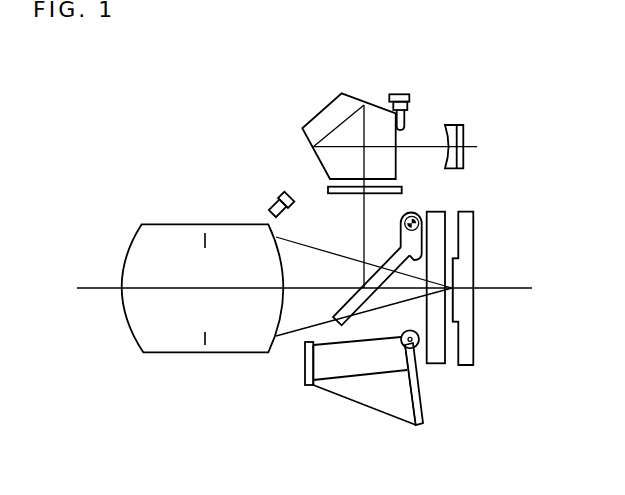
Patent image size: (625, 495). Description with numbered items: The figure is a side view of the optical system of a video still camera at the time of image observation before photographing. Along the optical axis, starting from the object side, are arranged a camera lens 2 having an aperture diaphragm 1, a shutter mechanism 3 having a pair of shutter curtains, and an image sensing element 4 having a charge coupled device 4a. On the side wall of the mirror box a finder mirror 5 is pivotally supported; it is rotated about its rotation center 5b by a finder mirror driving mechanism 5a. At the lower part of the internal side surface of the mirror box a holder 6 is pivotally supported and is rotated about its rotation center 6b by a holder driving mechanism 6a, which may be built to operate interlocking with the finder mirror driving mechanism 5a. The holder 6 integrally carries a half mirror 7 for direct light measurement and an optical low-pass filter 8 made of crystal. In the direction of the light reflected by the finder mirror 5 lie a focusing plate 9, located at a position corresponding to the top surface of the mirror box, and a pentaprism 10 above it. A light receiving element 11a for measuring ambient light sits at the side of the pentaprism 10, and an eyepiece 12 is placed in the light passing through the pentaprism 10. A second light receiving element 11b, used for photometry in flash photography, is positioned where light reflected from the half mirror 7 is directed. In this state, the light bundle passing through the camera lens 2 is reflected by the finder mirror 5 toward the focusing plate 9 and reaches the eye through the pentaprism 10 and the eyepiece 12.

The aperture diaphragm 1 is at (202, 242).
The camera lens 2 is at (145, 333).
The shutter mechanism 3 is at (447, 211).
The image sensing element 4 is at (467, 345).
The charge coupled device (CCD) 4a is at (453, 270).
The finder mirror 5 is at (337, 315).
The finder mirror driving mechanism 5a is at (400, 240).
The rotation center 5b is at (414, 215).
The holder 6 is at (421, 393).
The holder driving mechanism 6a is at (405, 345).
The rotation center 6b is at (407, 347).
The half mirror 7 is at (337, 397).
The optical low-pass filter 8 is at (320, 365).
The focusing plate 9 is at (402, 188).
The pentaprism 10 is at (333, 112).
The light receiving element 11a is at (407, 93).
The light receiving element 11b is at (275, 198).
The eyepiece 12 is at (460, 123).